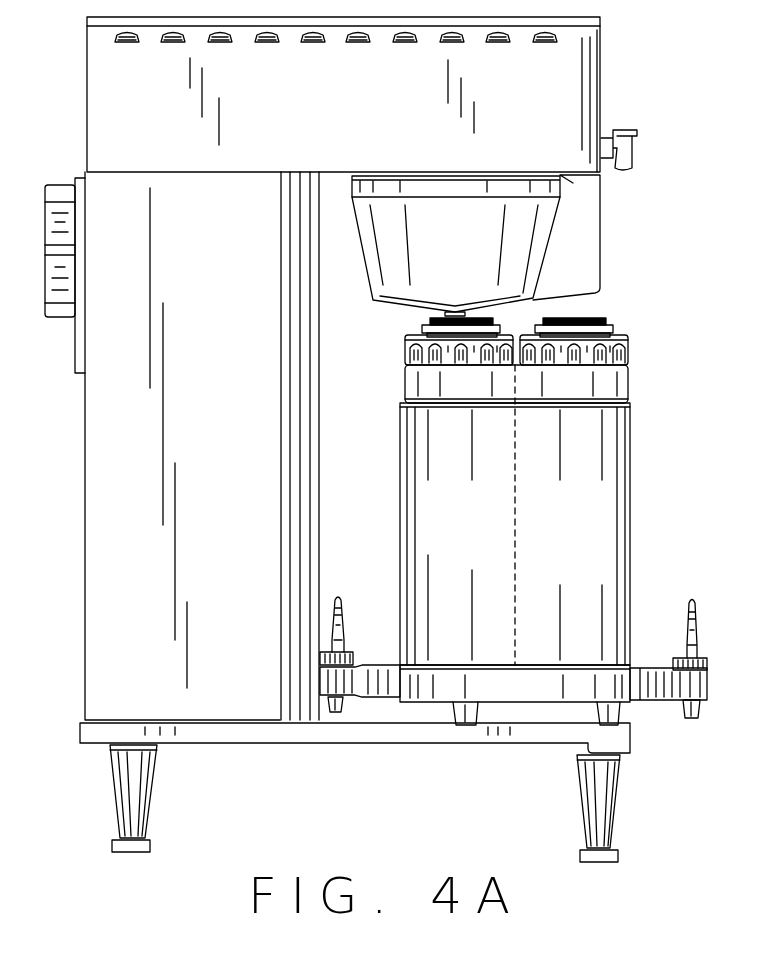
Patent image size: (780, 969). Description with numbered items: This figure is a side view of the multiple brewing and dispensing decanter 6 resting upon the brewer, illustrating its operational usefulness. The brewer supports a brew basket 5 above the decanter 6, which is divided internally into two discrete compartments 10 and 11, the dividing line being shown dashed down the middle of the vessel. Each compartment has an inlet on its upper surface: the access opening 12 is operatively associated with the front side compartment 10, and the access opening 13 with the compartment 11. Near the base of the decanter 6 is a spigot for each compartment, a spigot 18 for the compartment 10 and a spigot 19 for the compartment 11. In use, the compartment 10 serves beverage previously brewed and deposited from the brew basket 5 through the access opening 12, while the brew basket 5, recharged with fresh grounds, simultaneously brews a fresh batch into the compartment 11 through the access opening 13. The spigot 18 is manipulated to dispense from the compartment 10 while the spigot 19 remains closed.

The brew basket 5 is at (530, 233).
The decanter 6 is at (532, 505).
The compartment 10 is at (600, 487).
The compartment 11 is at (422, 460).
The inlet 12 is at (614, 333).
The inlet 13 is at (407, 333).
The spigot 18 is at (707, 668).
The spigot 19 is at (348, 655).